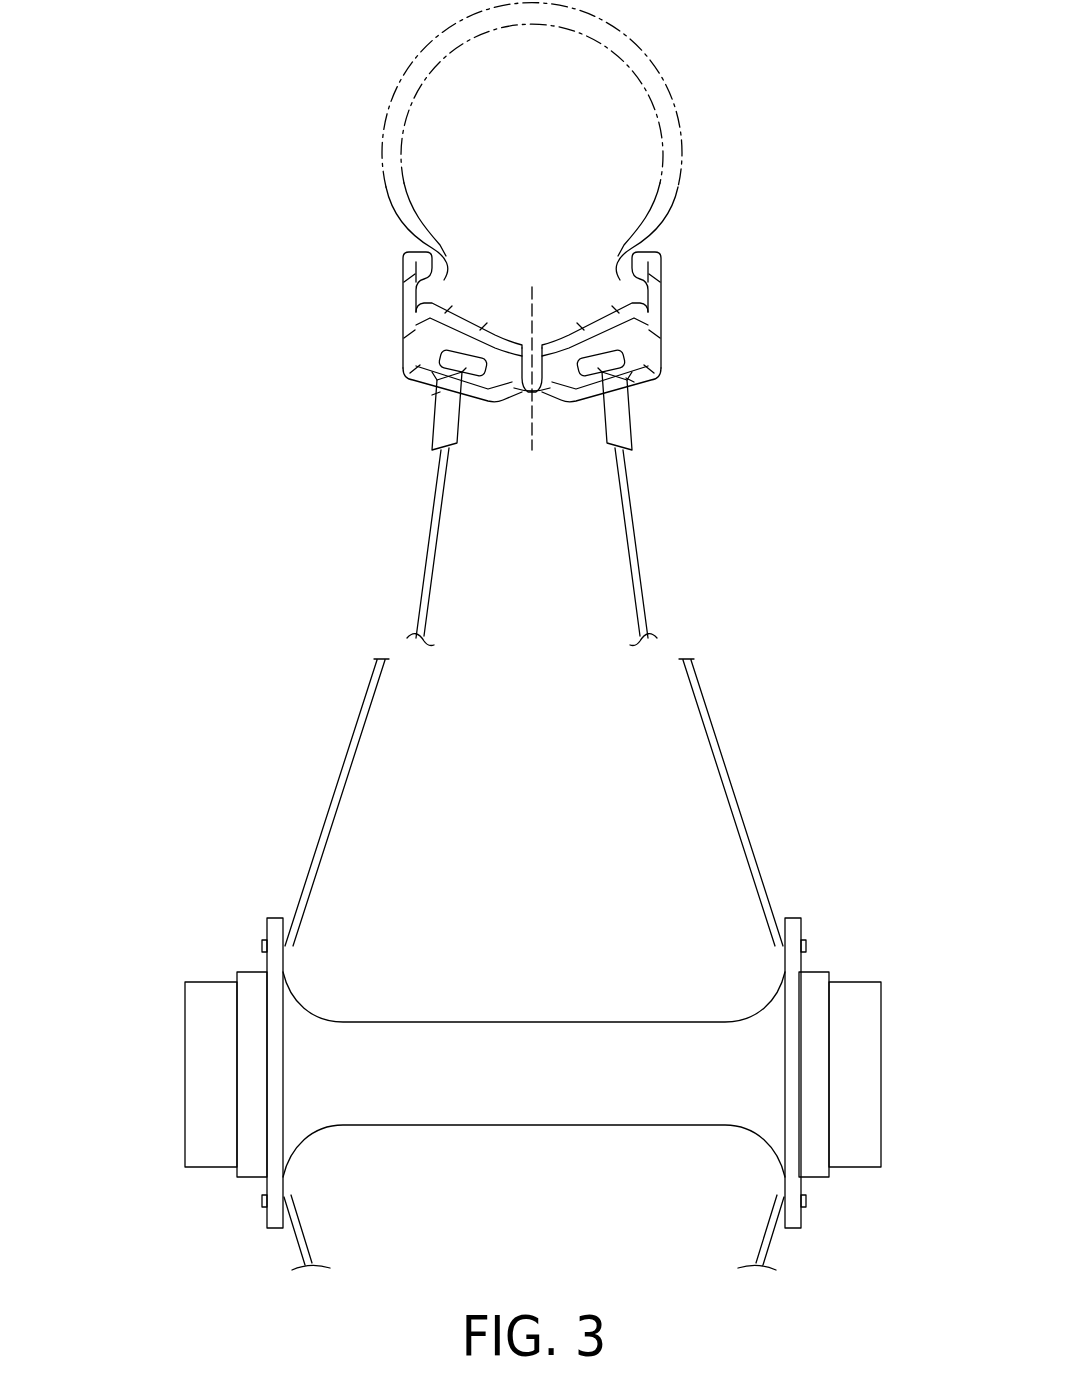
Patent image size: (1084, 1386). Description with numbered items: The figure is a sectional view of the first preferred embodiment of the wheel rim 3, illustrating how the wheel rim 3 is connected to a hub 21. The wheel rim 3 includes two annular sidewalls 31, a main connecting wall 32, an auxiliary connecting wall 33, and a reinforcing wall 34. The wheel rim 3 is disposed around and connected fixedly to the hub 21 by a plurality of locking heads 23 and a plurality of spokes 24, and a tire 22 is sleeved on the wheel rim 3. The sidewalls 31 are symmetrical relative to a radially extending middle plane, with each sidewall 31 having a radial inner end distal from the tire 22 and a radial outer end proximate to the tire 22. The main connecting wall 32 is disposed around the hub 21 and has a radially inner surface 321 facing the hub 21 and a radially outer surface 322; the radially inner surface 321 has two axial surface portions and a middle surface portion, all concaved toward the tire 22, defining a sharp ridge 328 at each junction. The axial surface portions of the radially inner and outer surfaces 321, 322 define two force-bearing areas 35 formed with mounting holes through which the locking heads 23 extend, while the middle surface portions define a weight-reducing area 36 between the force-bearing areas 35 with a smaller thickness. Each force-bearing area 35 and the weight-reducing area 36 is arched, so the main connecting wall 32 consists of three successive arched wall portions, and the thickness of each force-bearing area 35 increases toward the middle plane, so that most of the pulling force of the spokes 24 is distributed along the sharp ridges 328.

The wheel rim 3 is at (683, 305).
The hub 21 is at (185, 1008).
The tire 22 is at (677, 128).
The locking head 23 is at (433, 437).
The spoke 24 is at (638, 550).
The annular sidewall 31 is at (405, 267).
The main connecting wall 32 is at (422, 320).
The auxiliary connecting wall 33 is at (478, 307).
The reinforcing wall 34 is at (455, 382).
The force-bearing area 35 is at (440, 407).
The weight-reducing area 36 is at (533, 383).
The radially inner surface 321 is at (420, 387).
The radially outer surface 322 is at (640, 338).
The sharp ridge 328 is at (573, 400).